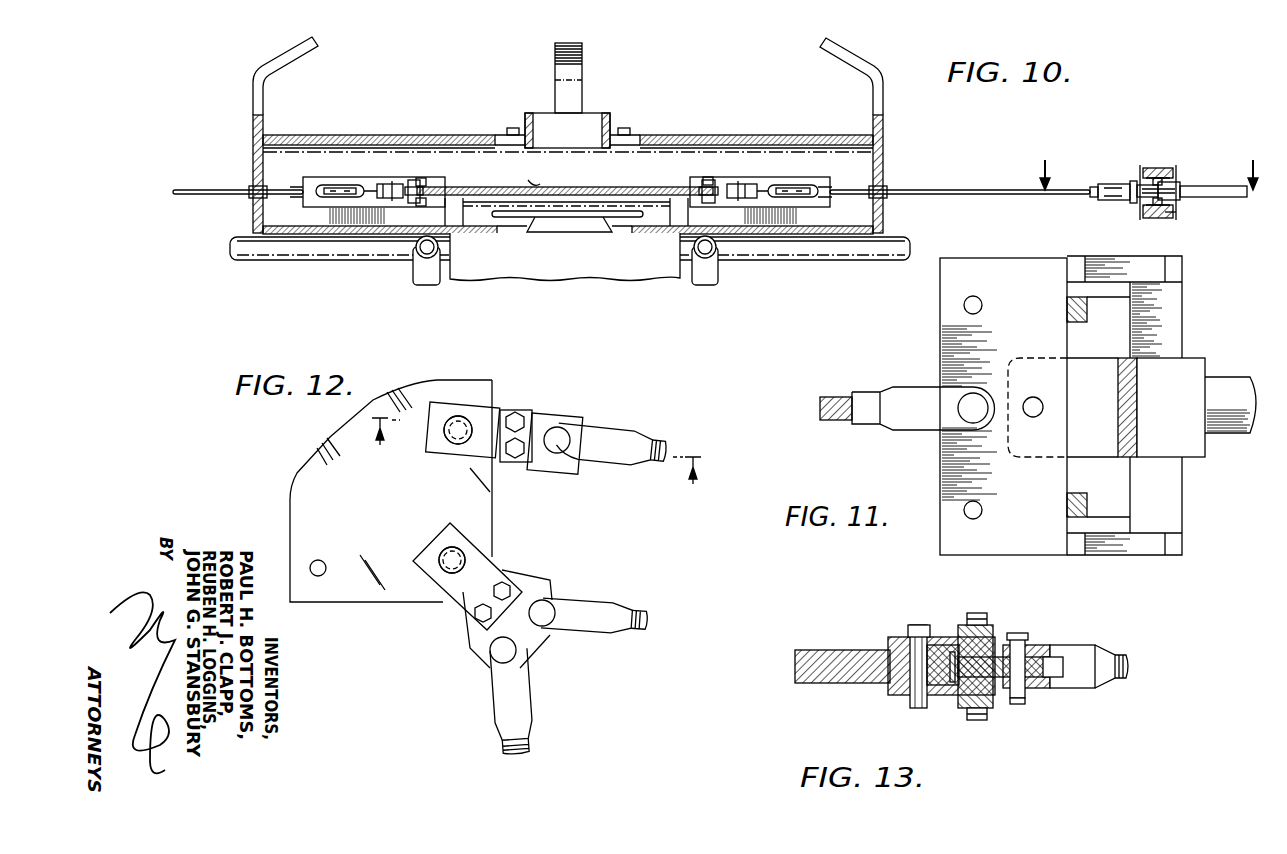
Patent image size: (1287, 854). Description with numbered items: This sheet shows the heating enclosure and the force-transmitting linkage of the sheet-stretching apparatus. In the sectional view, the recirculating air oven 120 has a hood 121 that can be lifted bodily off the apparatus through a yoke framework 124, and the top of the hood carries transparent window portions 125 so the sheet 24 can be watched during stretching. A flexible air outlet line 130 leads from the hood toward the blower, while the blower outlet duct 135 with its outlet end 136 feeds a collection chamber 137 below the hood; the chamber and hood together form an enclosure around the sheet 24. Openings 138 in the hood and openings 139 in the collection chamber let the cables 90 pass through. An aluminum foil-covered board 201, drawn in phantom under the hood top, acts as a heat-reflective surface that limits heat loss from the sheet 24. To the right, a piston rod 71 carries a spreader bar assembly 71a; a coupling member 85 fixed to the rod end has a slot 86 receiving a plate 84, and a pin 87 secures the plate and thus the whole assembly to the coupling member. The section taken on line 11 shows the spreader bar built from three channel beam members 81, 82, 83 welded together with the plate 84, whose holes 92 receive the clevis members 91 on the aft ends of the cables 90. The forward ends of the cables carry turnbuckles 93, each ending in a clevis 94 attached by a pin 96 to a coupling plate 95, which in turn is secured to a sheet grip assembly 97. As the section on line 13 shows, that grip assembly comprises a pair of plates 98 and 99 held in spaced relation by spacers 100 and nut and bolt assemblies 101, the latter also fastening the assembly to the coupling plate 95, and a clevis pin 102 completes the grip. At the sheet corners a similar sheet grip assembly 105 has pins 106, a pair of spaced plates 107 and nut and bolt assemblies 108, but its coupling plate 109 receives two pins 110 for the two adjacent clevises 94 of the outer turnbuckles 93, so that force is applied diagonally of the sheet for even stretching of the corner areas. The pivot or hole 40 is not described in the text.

In FIG. 10, the section line 11— 11 is at (1151, 165).
In FIG. 12, the section line 13— 13 is at (528, 465).
In FIG. 10, the sheet 24 is at (606, 187).
In FIG. 12, the sheet 24 is at (391, 491).
In FIG. 13, the sheet 24 is at (818, 652).
In FIG. 12, the pivot pin / hole 40 is at (318, 560).
In FIG. 13, the pivot pin / hole 40 is at (915, 680).
In FIG. 10, the piston rod 71 is at (1214, 186).
In FIG. 11, the piston rod 71 is at (1226, 380).
In FIG. 10, the spreader bar assembly 71a is at (1180, 212).
In FIG. 10, the channel beam member 81 is at (1163, 167).
In FIG. 11, the channel beam member 81 is at (1182, 265).
In FIG. 10, the channel beam member 82 is at (1150, 207).
In FIG. 11, the channel beam member 82 is at (1098, 407).
In FIG. 10, the channel beam member 83 is at (1160, 214).
In FIG. 11, the channel beam member 83 is at (1182, 313).
In FIG. 10, the plate 84 is at (1128, 198).
In FIG. 11, the plate 84 is at (1003, 264).
In FIG. 10, the coupling member 85 is at (1178, 185).
In FIG. 11, the coupling member 85 is at (1198, 442).
In FIG. 10, the slot 86 is at (1142, 186).
In FIG. 11, the slot 86 is at (1122, 445).
In FIG. 10, the pin 87 is at (1150, 167).
In FIG. 11, the pin 87 is at (1033, 412).
In FIG. 10, the cable 90 is at (180, 191).
In FIG. 11, the cable 90 is at (832, 408).
In FIG. 10, the clevis member 91 is at (1102, 184).
In FIG. 11, the clevis member 91 is at (912, 432).
In FIG. 11, the hole 92 is at (968, 308).
In FIG. 10, the turnbuckle 93 is at (345, 185).
In FIG. 10, the clevis 94 is at (390, 184).
In FIG. 12, the clevis 94 is at (614, 436).
In FIG. 13, the clevis 94 is at (1075, 682).
In FIG. 10, the coupling plate 95 is at (410, 203).
In FIG. 12, the coupling plate 95 is at (575, 416).
In FIG. 13, the coupling plate 95 is at (1038, 678).
In FIG. 12, the pin 96 is at (558, 448).
In FIG. 13, the pin 96 is at (1026, 642).
In FIG. 10, the sheet grip assembly 97 is at (710, 180).
In FIG. 12, the sheet grip assembly 97 is at (508, 410).
In FIG. 13, the sheet grip assembly 97 is at (942, 700).
In FIG. 12, the plate 98 is at (467, 402).
In FIG. 13, the plate 98 is at (943, 640).
In FIG. 13, the plate 99 is at (956, 690).
In FIG. 13, the spacer 100 is at (990, 655).
In FIG. 12, the nut and bolt assembly 101 is at (522, 417).
In FIG. 13, the nut and bolt assembly 101 is at (976, 614).
In FIG. 10, the clevis pin 102 is at (420, 195).
In FIG. 12, the clevis pin 102 is at (455, 416).
In FIG. 13, the clevis pin 102 is at (908, 628).
In FIG. 12, the sheet grip assembly 105 is at (548, 585).
In FIG. 12, the pin 106 is at (466, 562).
In FIG. 12, the spaced plate 107 is at (487, 575).
In FIG. 12, the nut and bolt assembly 108 is at (490, 608).
In FIG. 12, the coupling plate 109 is at (540, 642).
In FIG. 12, the pin 110 is at (548, 605).
In FIG. 10, the recirculating air oven 120 is at (250, 152).
In FIG. 10, the hood 121 is at (884, 165).
In FIG. 10, the yoke framework 124 is at (276, 60).
In FIG. 10, the transparent window portion 125 is at (402, 142).
In FIG. 10, the flexible air outlet line 130 is at (596, 112).
In FIG. 10, the blower outlet duct 135 is at (513, 282).
In FIG. 10, the outlet end 136 is at (625, 218).
In FIG. 10, the collection chamber 137 is at (838, 244).
In FIG. 10, the opening 138 is at (250, 186).
In FIG. 10, the opening 139 is at (251, 205).
In FIG. 10, the aluminum foil-covered board 201 is at (327, 150).